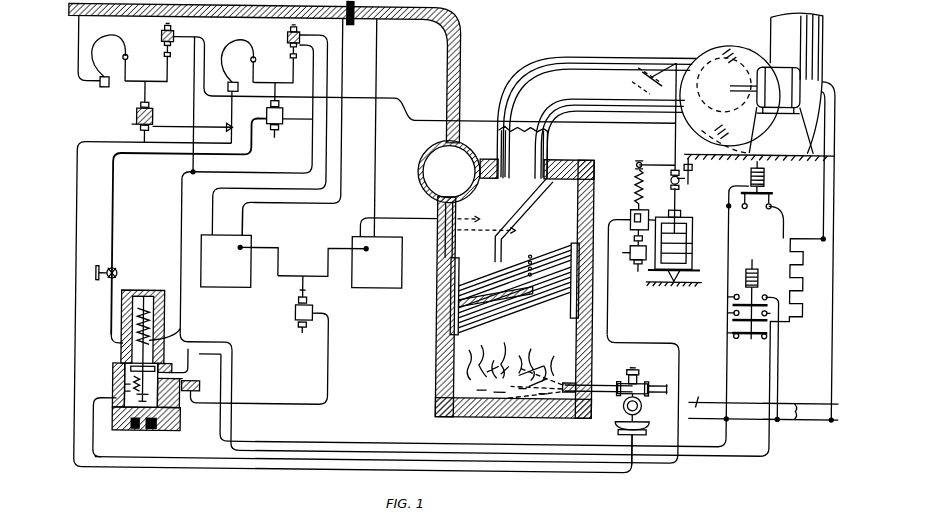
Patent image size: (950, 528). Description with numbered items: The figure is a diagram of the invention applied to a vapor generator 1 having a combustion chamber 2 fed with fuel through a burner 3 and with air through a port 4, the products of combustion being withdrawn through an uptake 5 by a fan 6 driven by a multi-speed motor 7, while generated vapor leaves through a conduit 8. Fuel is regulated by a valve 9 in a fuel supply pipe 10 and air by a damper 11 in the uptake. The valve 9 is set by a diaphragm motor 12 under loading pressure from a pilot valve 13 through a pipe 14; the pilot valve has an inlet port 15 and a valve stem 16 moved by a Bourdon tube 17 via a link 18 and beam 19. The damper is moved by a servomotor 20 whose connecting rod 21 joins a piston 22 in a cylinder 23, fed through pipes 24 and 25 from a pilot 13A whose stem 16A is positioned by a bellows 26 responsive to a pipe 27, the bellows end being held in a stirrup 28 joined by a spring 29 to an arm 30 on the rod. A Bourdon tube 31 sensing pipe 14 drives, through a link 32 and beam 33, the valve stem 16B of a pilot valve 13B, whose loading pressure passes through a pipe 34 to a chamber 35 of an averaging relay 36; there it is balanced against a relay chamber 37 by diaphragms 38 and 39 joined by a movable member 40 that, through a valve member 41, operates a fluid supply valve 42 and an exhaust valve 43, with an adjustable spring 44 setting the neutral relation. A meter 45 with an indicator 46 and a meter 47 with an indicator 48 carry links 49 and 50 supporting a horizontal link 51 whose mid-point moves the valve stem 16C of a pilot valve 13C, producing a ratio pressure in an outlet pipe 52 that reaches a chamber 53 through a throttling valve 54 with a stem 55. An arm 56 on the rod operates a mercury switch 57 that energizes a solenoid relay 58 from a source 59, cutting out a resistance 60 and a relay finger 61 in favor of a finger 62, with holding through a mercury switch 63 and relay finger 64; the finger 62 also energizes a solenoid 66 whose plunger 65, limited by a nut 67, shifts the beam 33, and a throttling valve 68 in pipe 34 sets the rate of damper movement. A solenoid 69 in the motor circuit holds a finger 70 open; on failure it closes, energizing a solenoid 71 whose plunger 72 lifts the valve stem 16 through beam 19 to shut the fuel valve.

The vapor generator 1 is at (437, 382).
The combustion chamber 2 is at (515, 360).
The burner 3 is at (568, 383).
The port 4 is at (592, 392).
The uptake or stack 5 is at (598, 57).
The fan 6 is at (728, 43).
The multi-speed motor 7 is at (770, 64).
The conduit 8 is at (459, 61).
The valve 9 is at (636, 368).
The fuel supply pipe 10 is at (651, 385).
The damper 11 is at (658, 72).
The diaphragm motor 12 is at (650, 425).
The pilot valve 13 is at (152, 118).
The pilot 13A is at (630, 255).
The pilot valve 13B is at (282, 120).
The pilot valve 13C is at (296, 318).
The pipe 14 is at (78, 206).
The inlet port 15 is at (132, 128).
The valve stem 16 is at (143, 92).
The stem 16A is at (632, 238).
The valve stem 16B is at (271, 93).
The valve stem 16C is at (306, 291).
The Bourdon tube 17 is at (107, 38).
The link 18 is at (124, 68).
The beam 19 is at (165, 76).
The fluid pressure servomotor 20 is at (684, 240).
The connecting rod 21 is at (672, 125).
The piston 22 is at (692, 246).
The cylinder 23 is at (692, 260).
The pipe 24 is at (672, 203).
The pipe 25 is at (664, 274).
The pressure sensitive bellows 26 is at (630, 214).
The pipe 27 is at (643, 341).
The stirrup 28 is at (636, 192).
The spring 29 is at (636, 164).
The arm 30 is at (670, 163).
The Bourdon tube 31 is at (235, 38).
The link 32 is at (253, 76).
The beam 33 is at (262, 86).
The pipe 34 is at (255, 152).
The chamber 35 is at (138, 331).
The averaging relay 36 is at (166, 352).
The relay chamber 37 is at (176, 406).
The diaphragm 38 is at (121, 367).
The diaphragm 39 is at (120, 394).
The movable member 40 is at (120, 378).
The valve member 41 is at (120, 418).
The fluid supply valve 42 is at (137, 433).
The exhaust valve 43 is at (160, 426).
The adjustable spring 44 is at (190, 332).
The meter 45 is at (244, 234).
The indicator 46 is at (266, 250).
The meter 47 is at (400, 262).
The indicator 48 is at (347, 250).
The link 49 is at (276, 268).
The link 50 is at (324, 262).
The horizontal link 51 is at (301, 287).
The outlet pipe 52 is at (331, 362).
The chamber 53 is at (126, 391).
The throttling valve 54 is at (189, 377).
The stem 55 is at (201, 393).
The arm 56 is at (670, 176).
The mercury switch 57 is at (695, 167).
The solenoid relay 58 is at (752, 264).
The source 59 is at (763, 409).
The resistance 60 is at (790, 240).
The relay finger 61 is at (752, 336).
The finger 62 is at (733, 318).
The mercury switch 63 is at (727, 203).
The relay finger 64 is at (733, 302).
The plunger 65 is at (288, 57).
The solenoid 66 is at (288, 32).
The nut 67 is at (300, 35).
The throttling valve 68 is at (109, 275).
The solenoid 69 is at (766, 176).
The finger 70 is at (774, 192).
The solenoid 71 is at (159, 38).
The plunger 72 is at (167, 59).